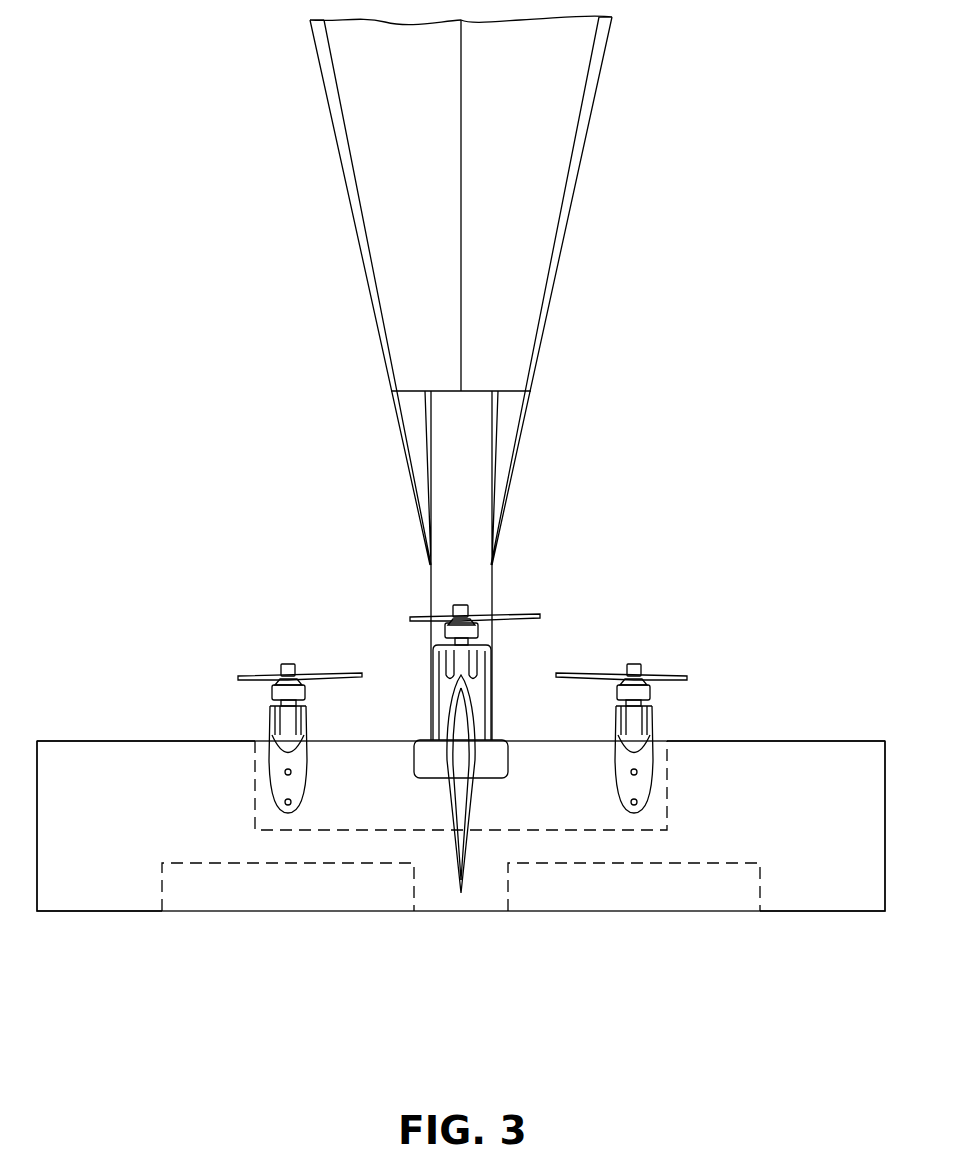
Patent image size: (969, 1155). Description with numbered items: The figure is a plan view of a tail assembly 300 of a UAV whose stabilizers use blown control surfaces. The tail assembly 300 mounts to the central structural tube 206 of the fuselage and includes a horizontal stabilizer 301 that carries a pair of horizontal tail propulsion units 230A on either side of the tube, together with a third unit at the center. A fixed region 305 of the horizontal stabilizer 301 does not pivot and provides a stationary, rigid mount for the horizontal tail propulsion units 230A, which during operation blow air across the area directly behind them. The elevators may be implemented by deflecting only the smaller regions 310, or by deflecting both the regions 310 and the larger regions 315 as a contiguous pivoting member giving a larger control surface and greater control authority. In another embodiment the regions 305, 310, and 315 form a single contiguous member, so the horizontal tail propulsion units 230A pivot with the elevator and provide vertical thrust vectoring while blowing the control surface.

The tail assembly 300 is at (689, 508).
The central structural tube 206 is at (476, 523).
The horizontal tail propulsion units 230A is at (268, 650).
The horizontal stabilizer 301 is at (786, 740).
The region 305 is at (384, 806).
The regions 310 is at (302, 899).
The region 315 is at (150, 821).